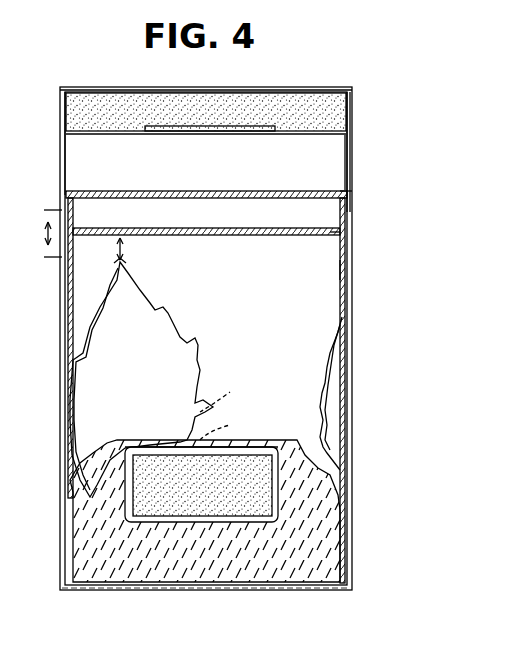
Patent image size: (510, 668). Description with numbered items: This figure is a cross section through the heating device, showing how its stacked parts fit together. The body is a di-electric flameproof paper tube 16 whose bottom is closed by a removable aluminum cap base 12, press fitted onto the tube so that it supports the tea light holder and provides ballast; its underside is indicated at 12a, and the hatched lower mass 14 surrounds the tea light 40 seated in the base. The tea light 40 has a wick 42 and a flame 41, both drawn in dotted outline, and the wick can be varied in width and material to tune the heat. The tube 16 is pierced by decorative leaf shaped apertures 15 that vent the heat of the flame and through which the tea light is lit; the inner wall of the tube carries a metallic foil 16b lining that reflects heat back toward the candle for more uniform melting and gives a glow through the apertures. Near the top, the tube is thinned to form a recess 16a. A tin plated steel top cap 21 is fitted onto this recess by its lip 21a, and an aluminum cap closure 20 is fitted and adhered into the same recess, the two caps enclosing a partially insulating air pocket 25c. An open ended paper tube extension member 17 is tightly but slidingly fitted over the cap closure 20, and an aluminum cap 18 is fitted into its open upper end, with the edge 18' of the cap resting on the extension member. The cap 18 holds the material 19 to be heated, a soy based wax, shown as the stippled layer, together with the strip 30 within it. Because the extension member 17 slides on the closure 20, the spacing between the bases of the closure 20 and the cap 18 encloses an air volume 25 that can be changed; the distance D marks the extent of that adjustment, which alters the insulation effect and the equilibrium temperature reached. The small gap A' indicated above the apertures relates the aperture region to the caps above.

The aluminum cap base 12 is at (350, 552).
The container bottom 12a is at (212, 590).
The base filling 14 is at (332, 510).
The leaf shaped apertures 15 is at (135, 375).
The paper tube 16 is at (343, 298).
The thinned recess 16a is at (335, 232).
The metallic foil 16b is at (330, 287).
The tube extension member 17 is at (352, 160).
The cap 18 is at (223, 136).
The lid rim 18' is at (77, 121).
The material to be heated 19 is at (298, 105).
The top cap aluminum closure 20 is at (275, 192).
The top cap tin 21 is at (253, 237).
The lip 21a is at (350, 197).
The air volume 25 is at (225, 168).
The air pocket 25c is at (220, 221).
The vent strip 30 is at (188, 127).
The tea light 40 is at (250, 490).
The flame 41 is at (236, 390).
The wick 42 is at (232, 424).
The distance D is at (42, 233).
The gap dimension A' is at (124, 250).